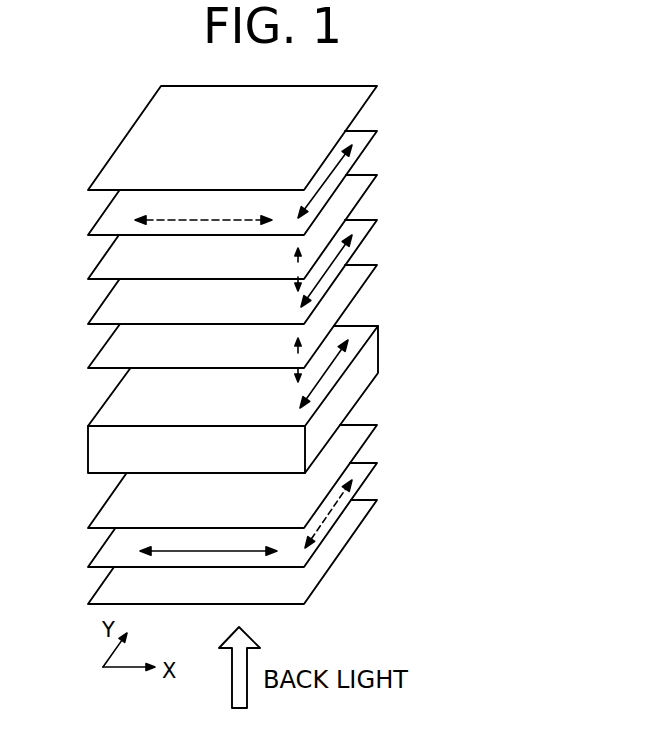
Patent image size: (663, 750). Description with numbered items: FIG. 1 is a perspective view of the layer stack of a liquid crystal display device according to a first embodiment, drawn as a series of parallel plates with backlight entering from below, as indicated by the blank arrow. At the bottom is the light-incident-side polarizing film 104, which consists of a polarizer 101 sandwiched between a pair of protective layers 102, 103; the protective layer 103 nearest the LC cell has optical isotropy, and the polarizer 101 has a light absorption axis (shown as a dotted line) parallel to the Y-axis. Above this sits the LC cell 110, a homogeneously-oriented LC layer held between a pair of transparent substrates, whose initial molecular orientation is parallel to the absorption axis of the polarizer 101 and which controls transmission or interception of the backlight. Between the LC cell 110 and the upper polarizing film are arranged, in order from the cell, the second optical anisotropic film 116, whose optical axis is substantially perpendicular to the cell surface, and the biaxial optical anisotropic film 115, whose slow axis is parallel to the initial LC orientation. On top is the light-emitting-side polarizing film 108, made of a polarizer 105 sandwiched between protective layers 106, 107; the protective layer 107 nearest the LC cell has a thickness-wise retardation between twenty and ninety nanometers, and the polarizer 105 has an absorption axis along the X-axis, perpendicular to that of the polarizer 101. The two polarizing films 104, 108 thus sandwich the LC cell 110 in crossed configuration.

The protective layer 106 is at (342, 137).
The polarizer 105 is at (342, 182).
The protective layer 107 is at (342, 226).
The light-emitting-side polarizing film 108 is at (311, 188).
The biaxial optical anisotropic film 115 is at (342, 270).
The second optical anisotropic film 116 is at (342, 315).
The LC cell 110 is at (342, 375).
The protective layer 103 is at (344, 471).
The polarizer 101 is at (343, 508).
The protective layer 102 is at (343, 546).
The light-incident-side polarizing film 104 is at (312, 514).